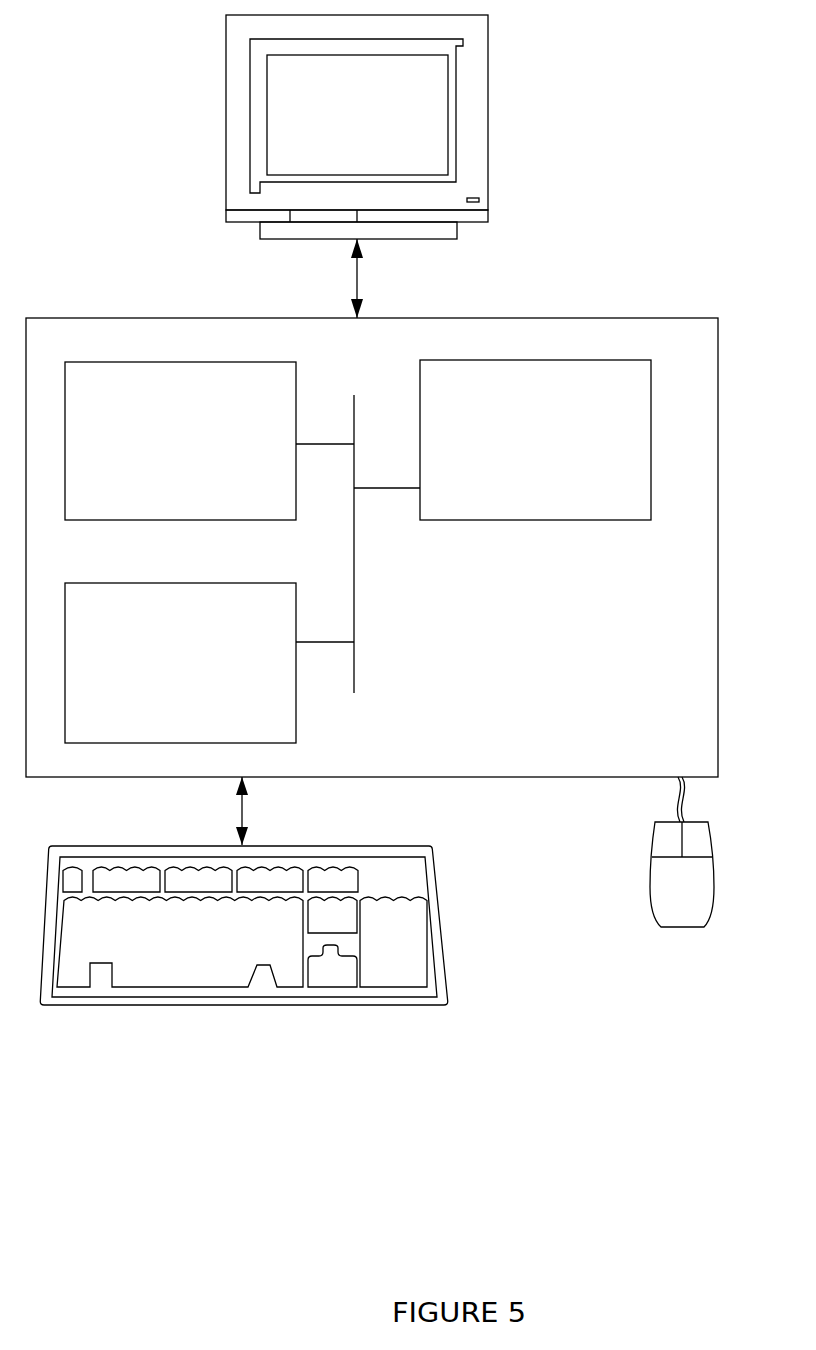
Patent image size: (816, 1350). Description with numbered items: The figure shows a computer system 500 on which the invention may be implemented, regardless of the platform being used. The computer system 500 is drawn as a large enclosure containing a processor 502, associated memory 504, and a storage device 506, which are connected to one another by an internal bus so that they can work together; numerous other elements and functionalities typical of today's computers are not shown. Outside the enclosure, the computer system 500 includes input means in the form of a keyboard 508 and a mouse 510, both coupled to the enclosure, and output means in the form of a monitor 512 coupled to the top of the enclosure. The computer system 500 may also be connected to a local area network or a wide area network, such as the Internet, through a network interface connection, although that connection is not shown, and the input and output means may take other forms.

The computer system 500 is at (699, 181).
The processor 502 is at (577, 451).
The memory 504 is at (202, 452).
The storage device 506 is at (201, 673).
The keyboard 508 is at (194, 964).
The mouse 510 is at (702, 896).
The monitor 512 is at (377, 131).